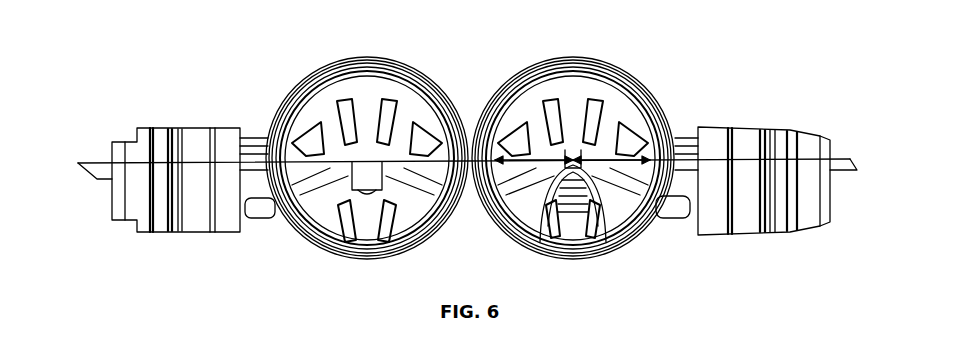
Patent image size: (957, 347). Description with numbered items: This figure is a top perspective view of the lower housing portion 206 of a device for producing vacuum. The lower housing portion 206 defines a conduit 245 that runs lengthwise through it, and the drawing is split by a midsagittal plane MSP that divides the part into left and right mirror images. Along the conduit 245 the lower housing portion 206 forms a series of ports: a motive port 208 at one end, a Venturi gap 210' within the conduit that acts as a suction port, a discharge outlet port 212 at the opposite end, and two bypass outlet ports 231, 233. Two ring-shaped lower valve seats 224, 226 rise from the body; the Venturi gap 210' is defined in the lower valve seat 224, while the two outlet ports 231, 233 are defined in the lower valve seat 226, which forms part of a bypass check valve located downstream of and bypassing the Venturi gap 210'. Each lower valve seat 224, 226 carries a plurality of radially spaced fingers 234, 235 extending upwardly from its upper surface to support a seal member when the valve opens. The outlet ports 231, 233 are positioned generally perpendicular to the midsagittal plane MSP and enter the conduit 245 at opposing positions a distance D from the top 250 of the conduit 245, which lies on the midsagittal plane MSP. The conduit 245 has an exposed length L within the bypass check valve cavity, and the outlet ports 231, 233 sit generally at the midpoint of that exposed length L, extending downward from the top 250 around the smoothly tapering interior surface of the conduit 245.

The lower housing portion 206 is at (465, 66).
The motive port 208 is at (122, 228).
The discharge outlet port 212 is at (822, 228).
The lower valve seat 224 is at (367, 160).
The lower valve seat 226 is at (581, 160).
The radially spaced fingers 234 is at (345, 100).
The radially spaced fingers 235 is at (548, 100).
The bypass outlet port 233 is at (576, 156).
The conduit 245 is at (250, 208).
The top of the conduit 250 is at (540, 232).
The bypass outlet port 231 is at (562, 212).
The Venturi gap 210' is at (361, 226).
The distance D is at (652, 152).
The exposed length L is at (660, 184).
The midsagittal plane MSP is at (90, 180).